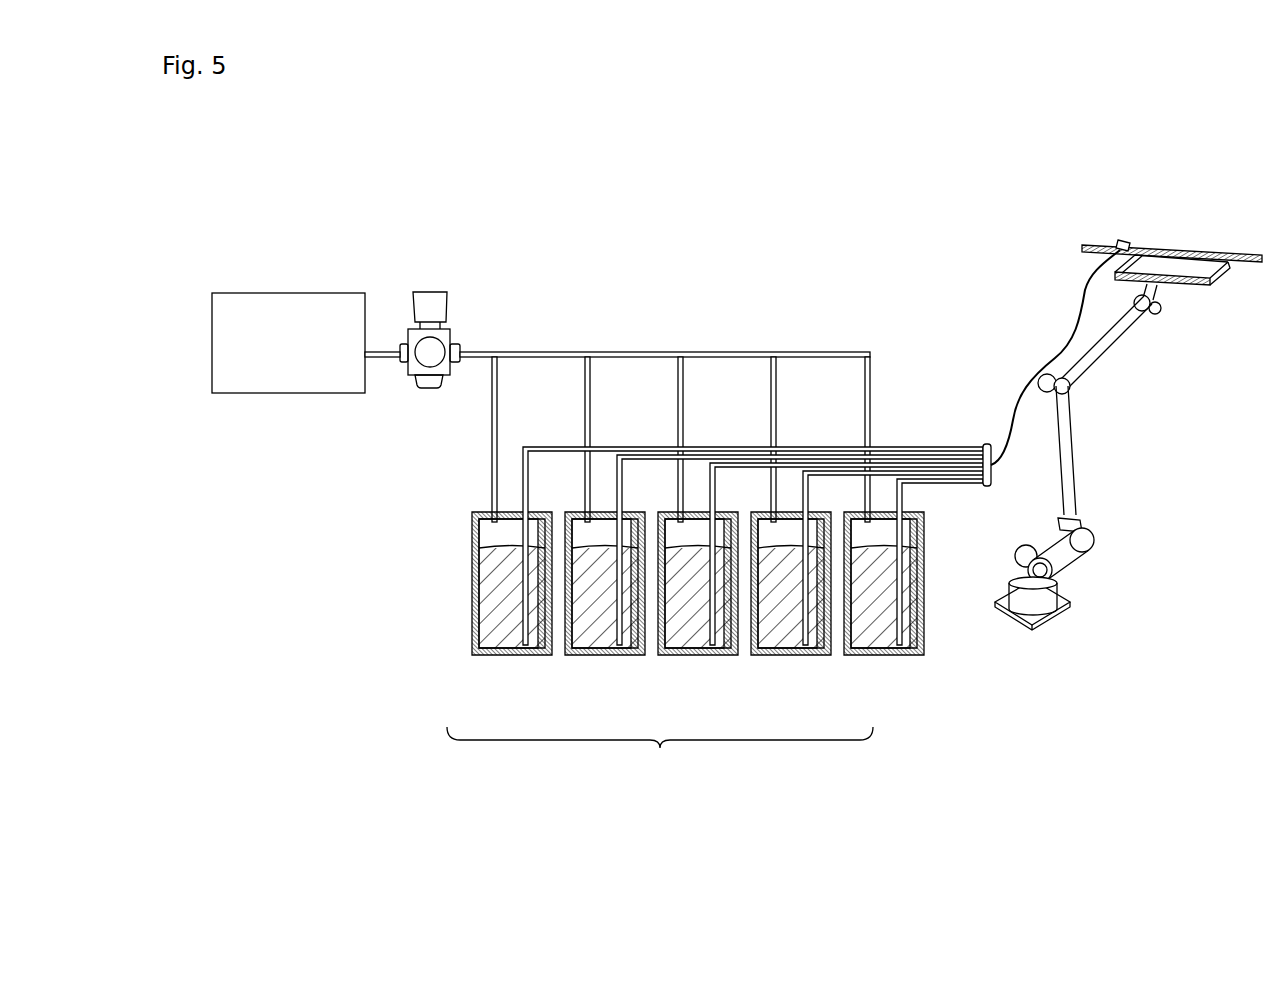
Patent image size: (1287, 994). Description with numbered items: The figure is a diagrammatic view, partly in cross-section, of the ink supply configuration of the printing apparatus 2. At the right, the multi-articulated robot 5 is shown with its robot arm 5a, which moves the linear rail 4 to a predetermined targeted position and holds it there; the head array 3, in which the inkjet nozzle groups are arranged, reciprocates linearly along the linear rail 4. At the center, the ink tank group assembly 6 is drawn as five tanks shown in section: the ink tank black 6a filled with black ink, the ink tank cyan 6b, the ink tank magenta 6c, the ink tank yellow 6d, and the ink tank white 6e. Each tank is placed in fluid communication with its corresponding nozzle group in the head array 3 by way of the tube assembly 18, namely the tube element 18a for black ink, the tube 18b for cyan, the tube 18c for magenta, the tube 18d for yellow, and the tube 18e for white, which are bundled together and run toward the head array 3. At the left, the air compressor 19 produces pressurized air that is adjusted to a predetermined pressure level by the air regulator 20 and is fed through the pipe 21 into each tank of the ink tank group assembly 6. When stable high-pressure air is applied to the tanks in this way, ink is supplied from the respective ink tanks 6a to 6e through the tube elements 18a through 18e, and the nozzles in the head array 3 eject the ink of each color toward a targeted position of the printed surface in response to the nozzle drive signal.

The printing apparatus 2 is at (1116, 457).
The head array 3 is at (1124, 243).
The linear rail 4 is at (1197, 253).
The multi-articulated robot 5 is at (1089, 457).
The robot arm 5a is at (1106, 352).
The ink tank group assembly 6 is at (660, 748).
The ink tank black 6a is at (856, 655).
The ink tank cyan 6b is at (767, 655).
The ink tank magenta 6c is at (670, 655).
The ink tank yellow 6d is at (579, 655).
The ink tank white 6e is at (486, 655).
The tube assembly 18 is at (818, 447).
The tube element 18a is at (947, 484).
The tube 18b is at (838, 471).
The tube 18c is at (748, 463).
The tube 18d is at (645, 455).
The tube 18e is at (552, 447).
The air compressor 19 is at (283, 394).
The air regulator 20 is at (437, 313).
The pipe 21 is at (733, 352).